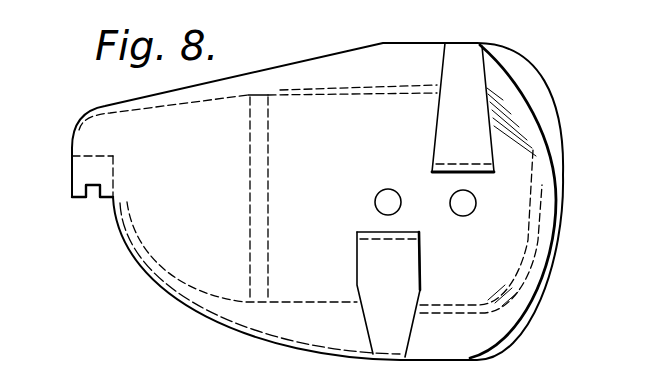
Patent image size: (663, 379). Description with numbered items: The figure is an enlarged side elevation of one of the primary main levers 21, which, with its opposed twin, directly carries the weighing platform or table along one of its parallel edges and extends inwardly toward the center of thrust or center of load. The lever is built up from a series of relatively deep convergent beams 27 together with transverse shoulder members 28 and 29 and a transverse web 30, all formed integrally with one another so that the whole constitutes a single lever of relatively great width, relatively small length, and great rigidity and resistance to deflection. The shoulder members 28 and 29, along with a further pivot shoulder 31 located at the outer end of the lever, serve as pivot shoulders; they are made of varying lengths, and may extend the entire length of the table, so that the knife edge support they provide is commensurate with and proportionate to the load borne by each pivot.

The primary main lever 21 is at (317, 201).
The convergent beam 27 is at (540, 87).
The transverse shoulder member 28 is at (463, 107).
The transverse shoulder member 29 is at (388, 294).
The transverse web 30 is at (268, 199).
The pivot shoulder 31 is at (93, 171).